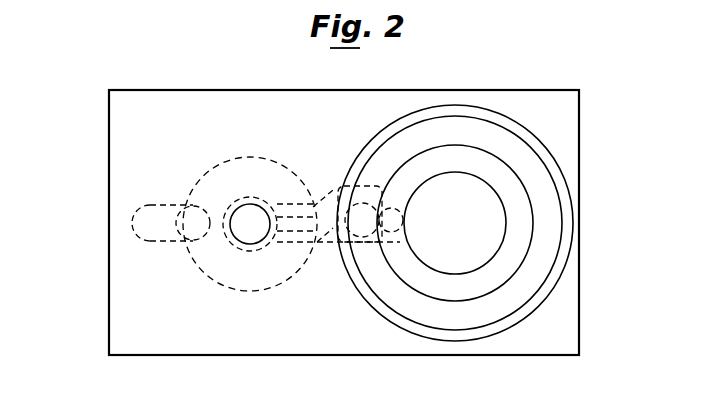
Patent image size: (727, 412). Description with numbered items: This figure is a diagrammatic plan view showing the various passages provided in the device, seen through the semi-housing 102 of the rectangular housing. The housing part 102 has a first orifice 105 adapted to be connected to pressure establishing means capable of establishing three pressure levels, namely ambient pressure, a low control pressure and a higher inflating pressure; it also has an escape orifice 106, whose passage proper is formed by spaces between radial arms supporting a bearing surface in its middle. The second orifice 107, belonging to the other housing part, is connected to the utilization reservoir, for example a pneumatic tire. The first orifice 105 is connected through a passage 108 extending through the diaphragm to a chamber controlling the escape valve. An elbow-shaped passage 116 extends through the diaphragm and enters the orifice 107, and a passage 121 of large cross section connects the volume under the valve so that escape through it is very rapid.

The semi-housing 102 is at (567, 117).
The first orifice 105 is at (245, 212).
The escape orifice 106 is at (487, 213).
The second orifice 107 is at (209, 237).
The passage 108 is at (326, 204).
The passage 116 is at (135, 223).
The passage 121 is at (326, 243).